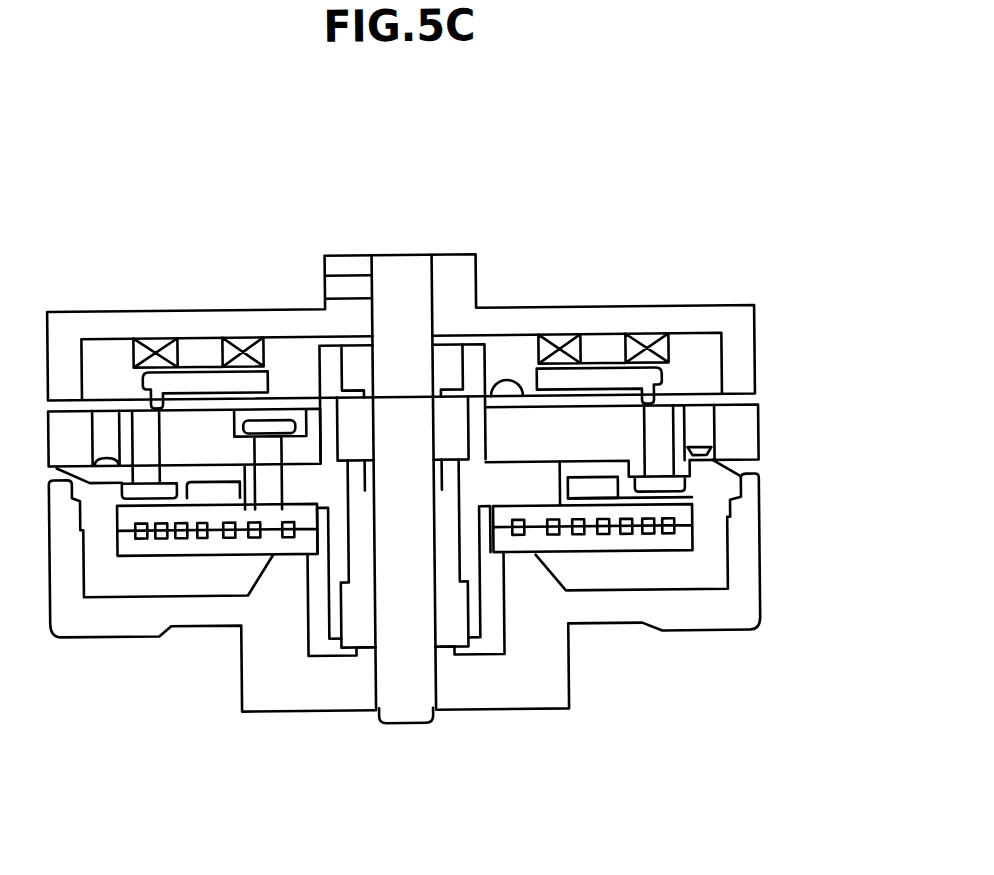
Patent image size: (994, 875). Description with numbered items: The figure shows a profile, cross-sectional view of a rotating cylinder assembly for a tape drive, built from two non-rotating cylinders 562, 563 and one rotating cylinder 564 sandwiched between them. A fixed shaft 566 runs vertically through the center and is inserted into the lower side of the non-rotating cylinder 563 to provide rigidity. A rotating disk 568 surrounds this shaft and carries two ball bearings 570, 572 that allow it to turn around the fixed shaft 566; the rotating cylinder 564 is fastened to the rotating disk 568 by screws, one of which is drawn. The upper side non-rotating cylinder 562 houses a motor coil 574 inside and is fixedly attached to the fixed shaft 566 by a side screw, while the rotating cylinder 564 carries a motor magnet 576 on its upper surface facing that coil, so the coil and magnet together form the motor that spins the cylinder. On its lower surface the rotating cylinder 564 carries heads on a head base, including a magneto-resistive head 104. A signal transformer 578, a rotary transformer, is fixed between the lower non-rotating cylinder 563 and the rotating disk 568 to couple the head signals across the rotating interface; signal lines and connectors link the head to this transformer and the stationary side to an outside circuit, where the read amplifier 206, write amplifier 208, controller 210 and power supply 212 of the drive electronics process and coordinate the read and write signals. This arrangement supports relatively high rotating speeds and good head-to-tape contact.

The magneto-resistive head 104 is at (759, 484).
The read amplifier 206 is at (835, 731).
The write amplifier 208 is at (767, 602).
The controller 210 is at (777, 616).
The power supply 212 is at (733, 610).
The upper side non-rotating cylinder 562 is at (757, 327).
The non-rotating cylinder 563 is at (762, 572).
The rotating cylinder 564 is at (760, 437).
The fixed shaft 566 is at (413, 728).
The rotating disk 568 is at (335, 555).
The ball bearing 570 is at (352, 640).
The ball bearing 572 is at (458, 413).
The motor coil 574 is at (640, 337).
The motor magnet 576 is at (631, 387).
The signal transformer 578 is at (693, 538).